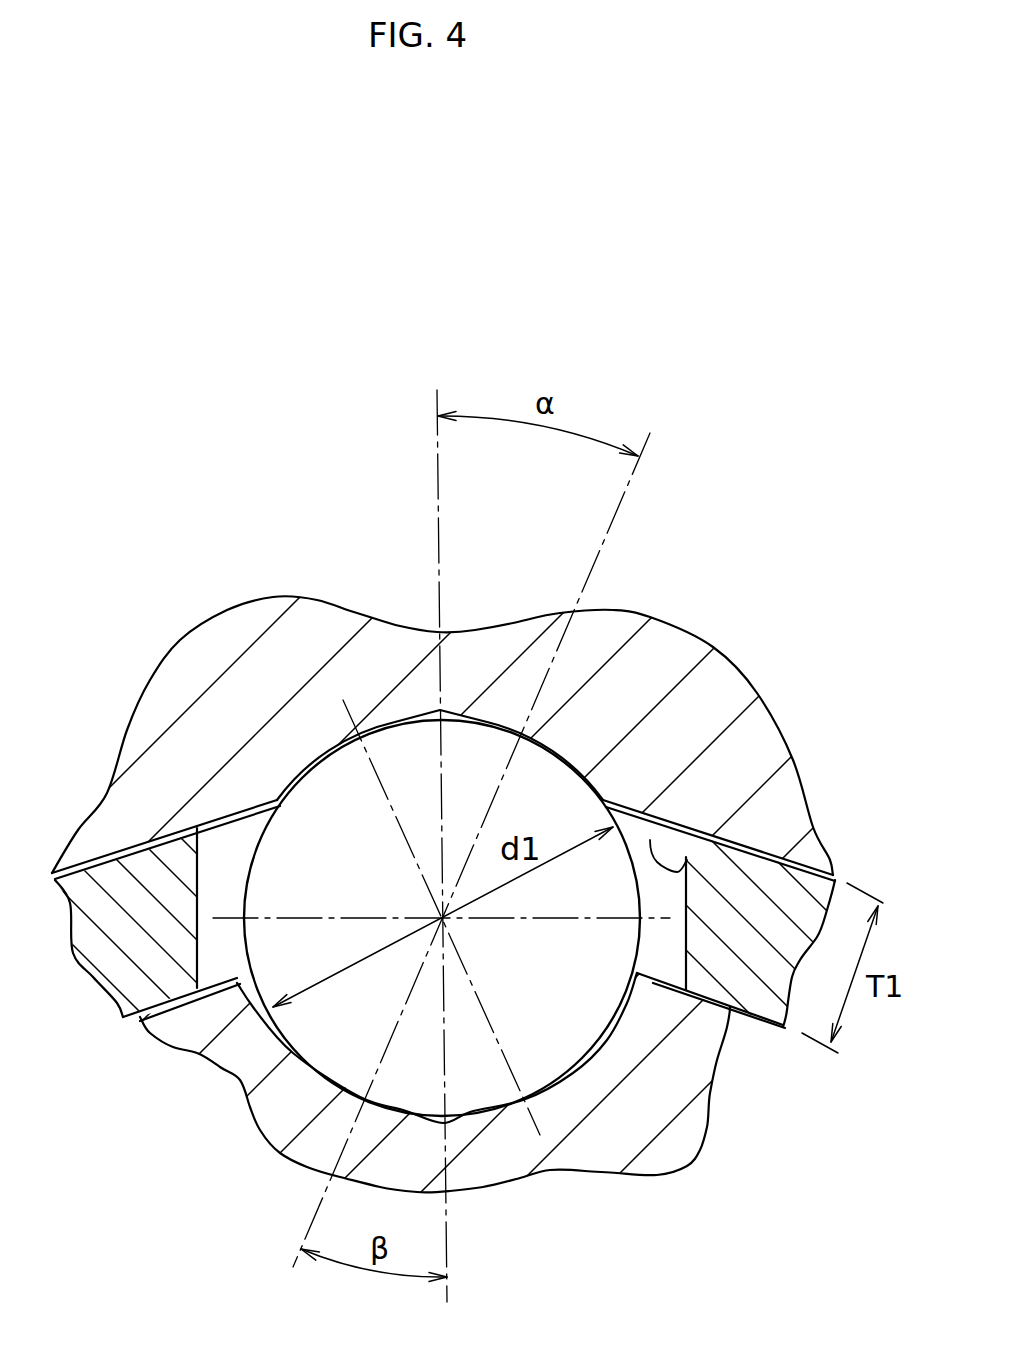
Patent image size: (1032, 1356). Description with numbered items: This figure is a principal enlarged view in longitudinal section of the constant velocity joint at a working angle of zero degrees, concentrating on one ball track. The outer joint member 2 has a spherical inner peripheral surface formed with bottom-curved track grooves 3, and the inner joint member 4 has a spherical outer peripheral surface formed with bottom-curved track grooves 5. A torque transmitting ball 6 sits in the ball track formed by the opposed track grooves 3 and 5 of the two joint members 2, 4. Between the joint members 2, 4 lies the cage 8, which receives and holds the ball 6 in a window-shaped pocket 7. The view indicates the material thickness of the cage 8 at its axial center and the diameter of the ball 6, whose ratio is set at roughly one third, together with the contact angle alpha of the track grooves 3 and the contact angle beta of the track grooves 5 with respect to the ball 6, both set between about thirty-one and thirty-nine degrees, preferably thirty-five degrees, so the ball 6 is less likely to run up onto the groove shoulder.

The outer joint member 2 is at (230, 695).
The track grooves 3 is at (410, 713).
The inner joint member 4 is at (633, 1107).
The track grooves 5 is at (467, 1120).
The torque transmitting balls 6 is at (320, 827).
The window-shaped pockets 7 is at (650, 840).
The cage 8 is at (773, 877).